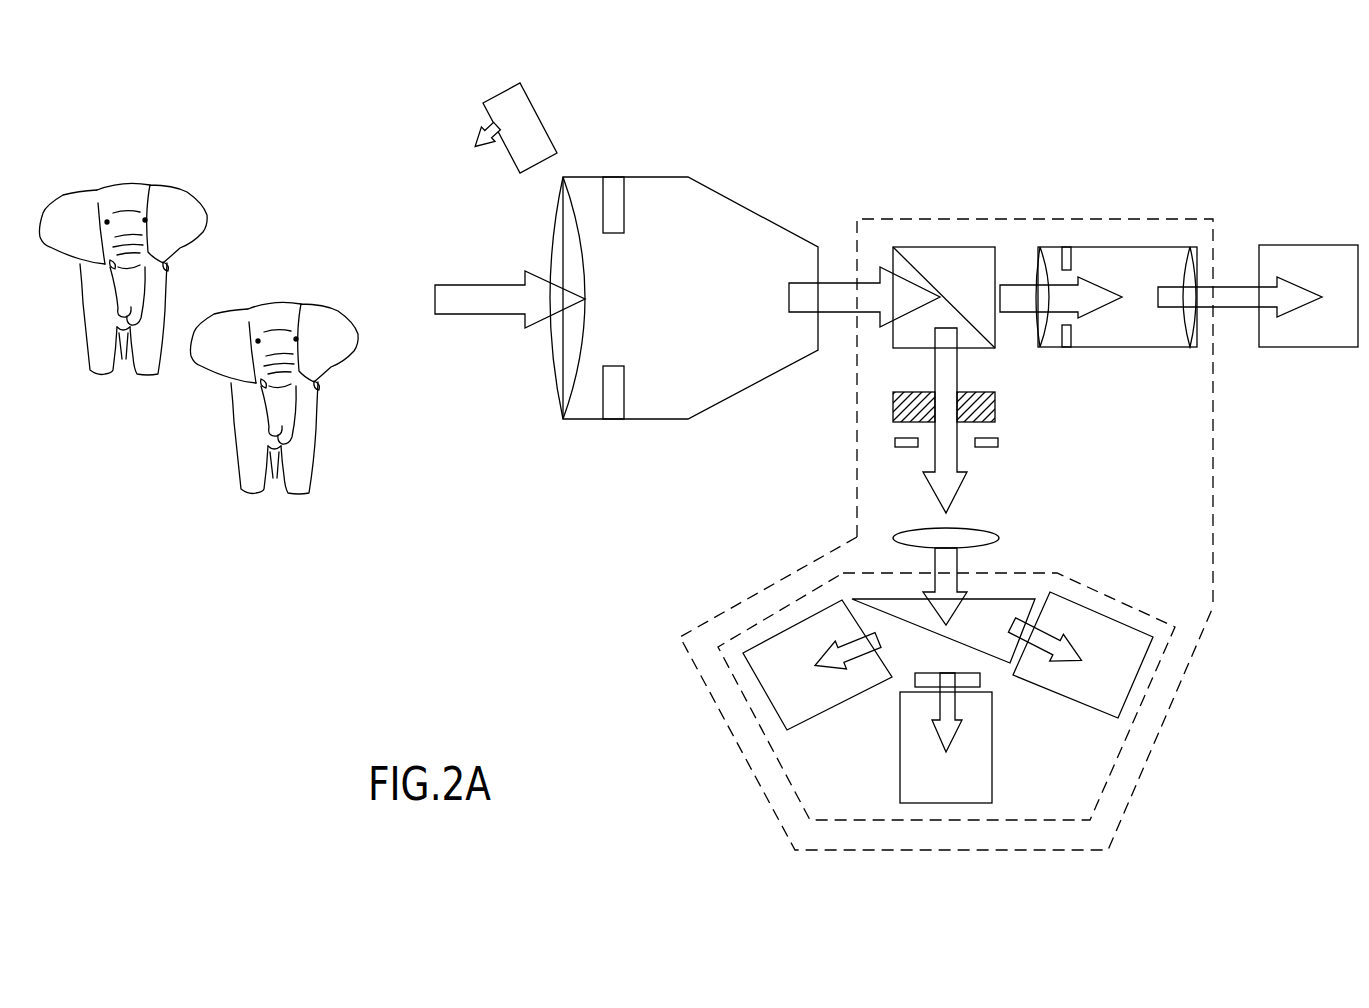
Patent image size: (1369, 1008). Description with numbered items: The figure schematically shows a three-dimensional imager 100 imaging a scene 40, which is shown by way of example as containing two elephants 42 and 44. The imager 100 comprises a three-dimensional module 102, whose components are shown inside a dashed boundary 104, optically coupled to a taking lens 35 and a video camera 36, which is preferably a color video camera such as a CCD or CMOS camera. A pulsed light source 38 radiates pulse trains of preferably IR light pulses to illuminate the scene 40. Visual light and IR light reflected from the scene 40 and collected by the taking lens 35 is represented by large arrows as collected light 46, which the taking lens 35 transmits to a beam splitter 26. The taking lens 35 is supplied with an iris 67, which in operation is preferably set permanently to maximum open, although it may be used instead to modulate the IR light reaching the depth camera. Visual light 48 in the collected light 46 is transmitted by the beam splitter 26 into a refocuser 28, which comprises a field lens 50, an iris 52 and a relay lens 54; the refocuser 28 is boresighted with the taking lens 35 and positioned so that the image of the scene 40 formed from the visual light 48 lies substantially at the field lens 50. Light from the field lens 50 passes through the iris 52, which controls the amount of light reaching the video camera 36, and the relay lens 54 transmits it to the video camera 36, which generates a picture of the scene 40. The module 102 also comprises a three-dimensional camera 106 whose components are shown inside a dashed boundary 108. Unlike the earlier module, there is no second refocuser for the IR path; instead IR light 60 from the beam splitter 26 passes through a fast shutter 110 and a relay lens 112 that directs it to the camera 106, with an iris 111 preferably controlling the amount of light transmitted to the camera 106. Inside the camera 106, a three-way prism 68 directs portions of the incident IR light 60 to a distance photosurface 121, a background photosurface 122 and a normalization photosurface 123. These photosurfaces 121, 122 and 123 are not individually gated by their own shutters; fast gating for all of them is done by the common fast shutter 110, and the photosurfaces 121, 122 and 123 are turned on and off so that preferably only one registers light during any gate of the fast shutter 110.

The 3D imager 100 is at (300, 112).
The 3D module 102 is at (838, 160).
The dashed boundary 104 is at (960, 220).
The 3D camera 106 is at (1153, 612).
The dashed boundary 108 is at (1108, 598).
The fast shutter 110 is at (893, 400).
The iris 111 is at (960, 440).
The relay lens 112 is at (973, 540).
The distance photosurface 121 is at (777, 675).
The background photosurface 122 is at (992, 787).
The normalization photosurface 123 is at (1118, 680).
The beam splitter 26 is at (973, 310).
The refocuser 28 is at (1117, 342).
The taking lens 35 is at (683, 361).
The video camera 36 is at (1314, 276).
The pulsed light source 38 is at (500, 139).
The scene 40 is at (192, 523).
The elephant 42 is at (303, 473).
The elephant 44 is at (112, 373).
The collected light 46 is at (473, 297).
The visual light 48 is at (1235, 298).
The field lens 50 is at (1040, 262).
The iris 52 is at (1073, 332).
The relay lens 54 is at (1193, 267).
The IR light 60 is at (942, 372).
The iris 67 is at (611, 373).
The three-way prism 68 is at (1003, 605).